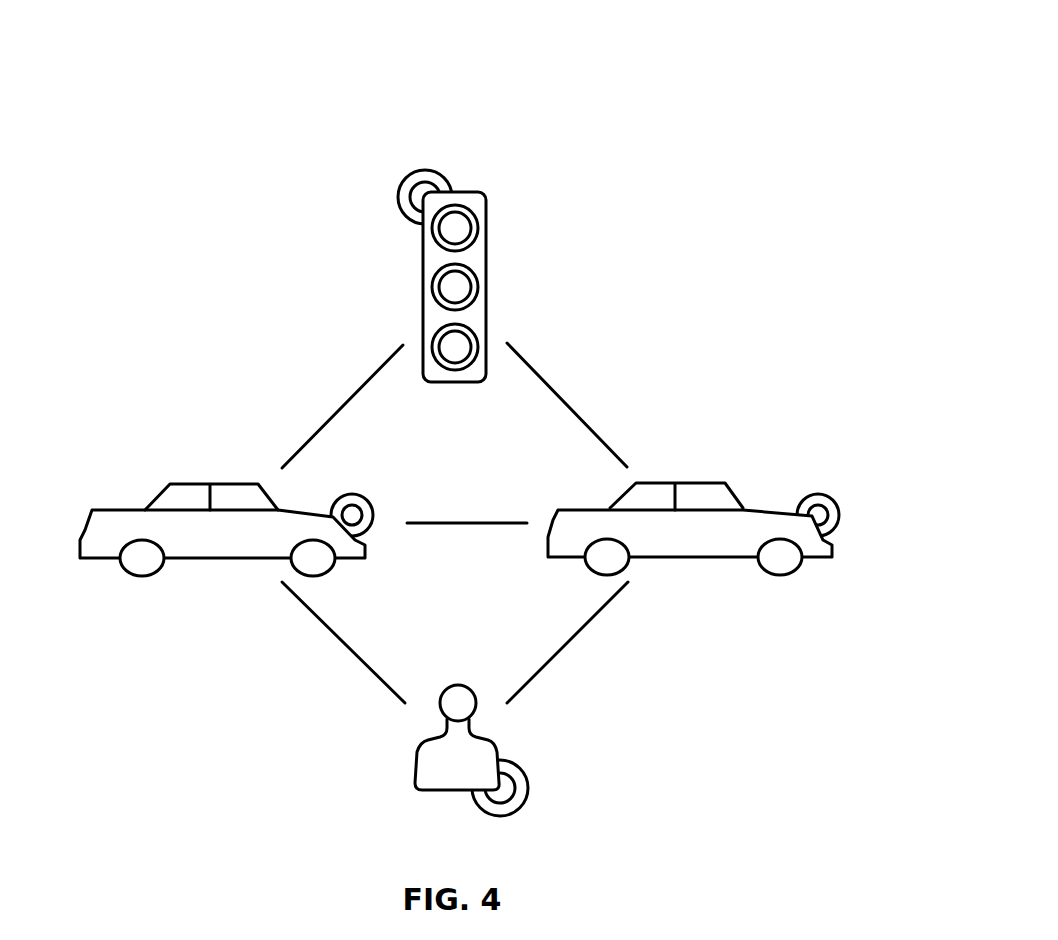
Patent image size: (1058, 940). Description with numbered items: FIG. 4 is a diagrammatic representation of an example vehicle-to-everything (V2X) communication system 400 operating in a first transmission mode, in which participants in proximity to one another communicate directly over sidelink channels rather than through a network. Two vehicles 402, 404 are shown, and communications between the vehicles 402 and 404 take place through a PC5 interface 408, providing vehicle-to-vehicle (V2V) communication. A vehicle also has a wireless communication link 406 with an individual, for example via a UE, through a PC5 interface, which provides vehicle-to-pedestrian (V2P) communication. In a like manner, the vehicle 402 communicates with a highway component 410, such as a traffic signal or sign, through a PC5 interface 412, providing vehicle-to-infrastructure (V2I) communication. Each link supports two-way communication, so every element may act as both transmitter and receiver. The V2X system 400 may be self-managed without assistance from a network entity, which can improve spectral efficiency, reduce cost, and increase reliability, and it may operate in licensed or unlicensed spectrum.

The V2X system 400 is at (269, 64).
The vehicle 402 is at (82, 558).
The vehicle 404 is at (833, 557).
The wireless communication link 406 is at (372, 673).
The PC5 interface 408 is at (485, 523).
The highway component 410 is at (437, 382).
The PC5 interface 412 is at (380, 367).